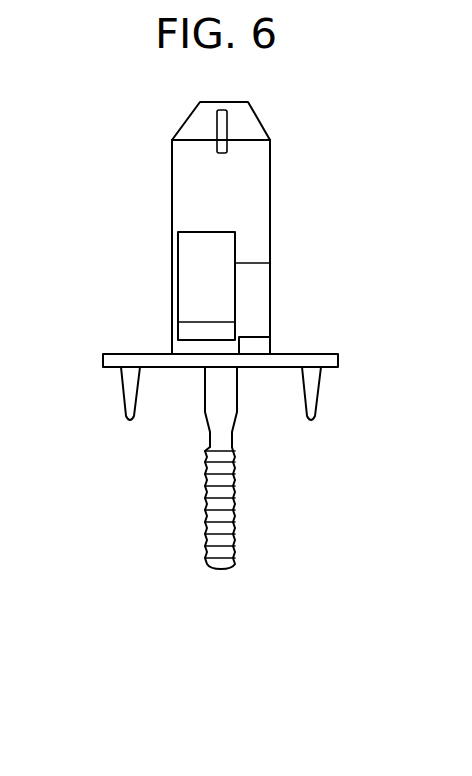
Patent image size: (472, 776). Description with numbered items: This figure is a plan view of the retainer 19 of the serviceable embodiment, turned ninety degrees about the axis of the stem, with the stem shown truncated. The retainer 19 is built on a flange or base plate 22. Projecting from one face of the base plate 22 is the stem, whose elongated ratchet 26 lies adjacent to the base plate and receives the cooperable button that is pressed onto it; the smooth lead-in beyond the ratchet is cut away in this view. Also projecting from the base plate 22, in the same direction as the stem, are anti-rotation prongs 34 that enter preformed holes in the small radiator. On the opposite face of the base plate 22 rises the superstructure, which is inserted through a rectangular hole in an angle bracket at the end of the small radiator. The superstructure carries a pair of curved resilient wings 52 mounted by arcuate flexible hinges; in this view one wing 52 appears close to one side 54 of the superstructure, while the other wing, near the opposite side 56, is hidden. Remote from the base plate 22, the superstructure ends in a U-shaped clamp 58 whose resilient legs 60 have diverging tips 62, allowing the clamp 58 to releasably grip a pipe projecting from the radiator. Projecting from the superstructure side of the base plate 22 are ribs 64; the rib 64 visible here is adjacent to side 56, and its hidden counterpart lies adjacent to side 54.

The retainer 19 is at (195, 527).
The base plate 22 is at (108, 361).
The ratchet 26 is at (222, 528).
The anti-rotation prongs 34 is at (131, 412).
The curved resilient wings 52 is at (196, 272).
The side of the superstructure 54 is at (171, 170).
The opposite side of the superstructure 56 is at (270, 230).
The U-shaped clamp 58 is at (287, 142).
The resilient legs 60 is at (257, 177).
The diverging tips 62 is at (250, 125).
The ribs 64 is at (258, 345).